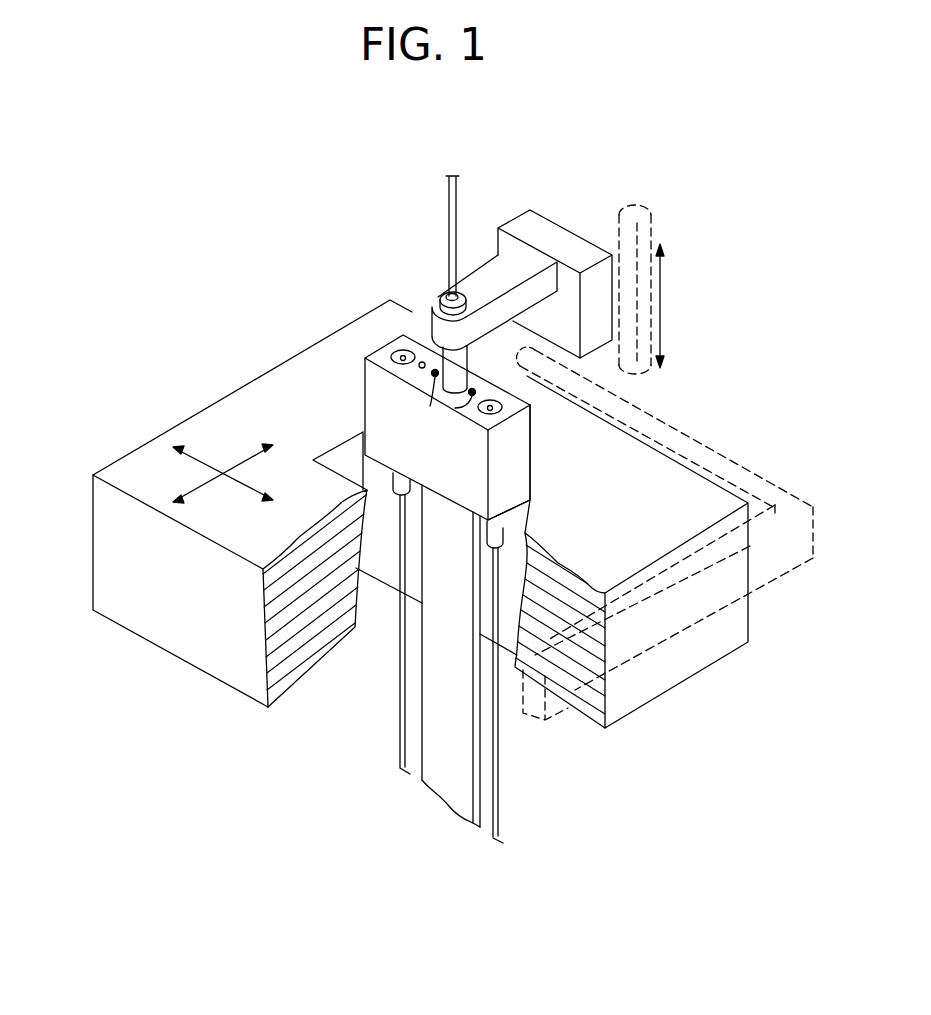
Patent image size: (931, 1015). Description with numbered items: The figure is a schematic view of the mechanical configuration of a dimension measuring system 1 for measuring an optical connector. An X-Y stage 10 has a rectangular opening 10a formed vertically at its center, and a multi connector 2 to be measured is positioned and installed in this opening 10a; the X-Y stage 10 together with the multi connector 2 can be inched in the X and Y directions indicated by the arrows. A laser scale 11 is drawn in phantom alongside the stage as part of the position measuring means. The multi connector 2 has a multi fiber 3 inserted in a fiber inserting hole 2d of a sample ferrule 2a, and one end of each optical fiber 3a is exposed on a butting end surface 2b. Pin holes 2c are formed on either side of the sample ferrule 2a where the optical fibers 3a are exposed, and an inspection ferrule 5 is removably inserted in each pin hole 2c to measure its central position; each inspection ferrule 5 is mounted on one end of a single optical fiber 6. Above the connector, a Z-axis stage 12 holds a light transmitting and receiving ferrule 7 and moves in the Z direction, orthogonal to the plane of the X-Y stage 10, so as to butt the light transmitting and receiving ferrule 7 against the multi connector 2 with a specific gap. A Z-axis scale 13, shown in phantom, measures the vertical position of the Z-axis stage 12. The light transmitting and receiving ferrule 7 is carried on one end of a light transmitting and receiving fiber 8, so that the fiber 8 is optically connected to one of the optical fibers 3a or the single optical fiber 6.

The dimension measuring system 1 is at (278, 285).
The multi connector 2 is at (501, 504).
The sample ferrule 2a is at (508, 444).
The butting end surface 2b is at (522, 391).
The pin holes 2c is at (399, 355).
The fiber inserting hole 2d is at (419, 368).
The multi fiber 3 is at (428, 714).
The optical fibers 3a is at (437, 402).
The inspection ferrule 5 is at (395, 497).
The single optical fiber 6 is at (530, 783).
The light transmitting and receiving ferrule 7 is at (438, 296).
The light transmitting and receiving fiber 8 is at (448, 228).
The X-Y stage 10 is at (228, 396).
The rectangular opening 10a is at (337, 460).
The laser scale 11 is at (698, 447).
The Z-axis stage 12 is at (578, 250).
The Z-axis scale 13 is at (647, 234).